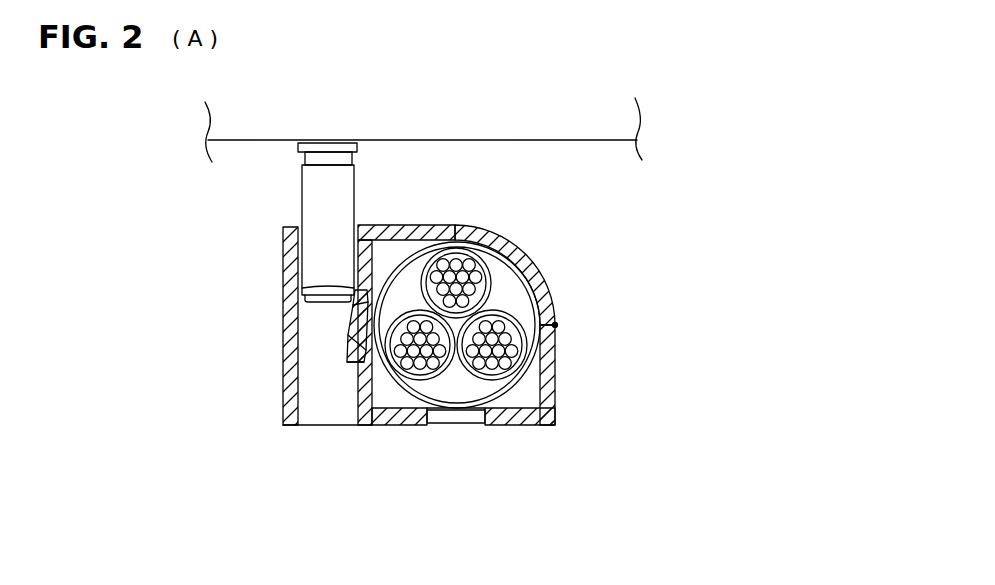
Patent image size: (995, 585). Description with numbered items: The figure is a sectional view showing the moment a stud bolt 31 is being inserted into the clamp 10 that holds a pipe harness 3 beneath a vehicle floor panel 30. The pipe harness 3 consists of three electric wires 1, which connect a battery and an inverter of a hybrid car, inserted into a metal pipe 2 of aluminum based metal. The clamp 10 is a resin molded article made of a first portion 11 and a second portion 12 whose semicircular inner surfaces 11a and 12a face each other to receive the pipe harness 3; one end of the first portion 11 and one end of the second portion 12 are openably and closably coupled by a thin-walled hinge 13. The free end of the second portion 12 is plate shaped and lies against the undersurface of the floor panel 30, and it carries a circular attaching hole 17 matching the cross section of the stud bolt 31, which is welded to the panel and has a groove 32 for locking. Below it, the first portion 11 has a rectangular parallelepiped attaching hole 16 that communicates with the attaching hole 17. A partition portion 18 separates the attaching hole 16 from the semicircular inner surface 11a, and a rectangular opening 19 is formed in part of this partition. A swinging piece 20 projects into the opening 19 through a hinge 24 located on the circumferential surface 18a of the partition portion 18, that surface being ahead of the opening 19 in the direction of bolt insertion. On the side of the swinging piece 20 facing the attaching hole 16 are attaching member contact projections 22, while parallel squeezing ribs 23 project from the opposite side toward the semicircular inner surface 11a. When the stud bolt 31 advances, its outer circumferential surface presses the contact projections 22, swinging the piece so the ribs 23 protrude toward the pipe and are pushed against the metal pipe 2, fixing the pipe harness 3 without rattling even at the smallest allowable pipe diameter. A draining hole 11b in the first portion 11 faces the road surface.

The electric wire 1 is at (413, 250).
The metal pipe 2 is at (376, 380).
The pipe harness 3 is at (457, 366).
The clamp 10 is at (479, 332).
The first portion 11 is at (463, 368).
The semicircular inner surface 11a is at (510, 392).
The draining hole 11b is at (467, 418).
The second portion 12 is at (506, 240).
The semicircular inner surface 12a is at (487, 238).
The thin-walled hinge 13 is at (597, 322).
The attaching hole 16 is at (320, 405).
The attaching hole 17 is at (336, 176).
The partition portion 18 is at (366, 395).
The circumferential surface 18a is at (360, 230).
The rectangular opening 19 is at (349, 373).
The swinging piece 20 is at (288, 390).
The attaching member contact projection 22 is at (349, 325).
The squeezing rib 23 is at (349, 340).
The hinge 24 is at (340, 270).
The floor panel 30 is at (593, 133).
The stud bolt 31 is at (358, 195).
The groove 32 is at (352, 160).